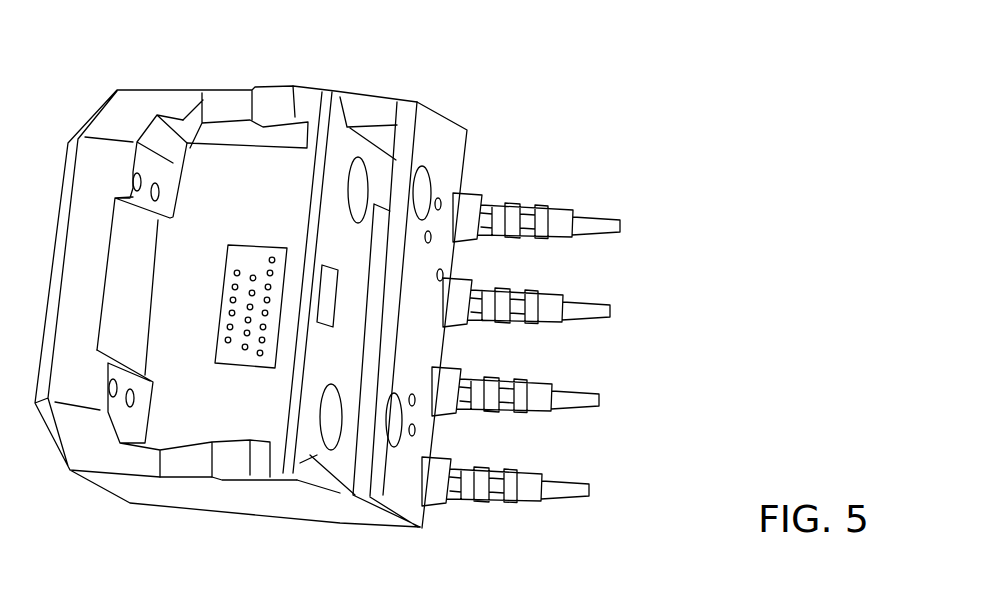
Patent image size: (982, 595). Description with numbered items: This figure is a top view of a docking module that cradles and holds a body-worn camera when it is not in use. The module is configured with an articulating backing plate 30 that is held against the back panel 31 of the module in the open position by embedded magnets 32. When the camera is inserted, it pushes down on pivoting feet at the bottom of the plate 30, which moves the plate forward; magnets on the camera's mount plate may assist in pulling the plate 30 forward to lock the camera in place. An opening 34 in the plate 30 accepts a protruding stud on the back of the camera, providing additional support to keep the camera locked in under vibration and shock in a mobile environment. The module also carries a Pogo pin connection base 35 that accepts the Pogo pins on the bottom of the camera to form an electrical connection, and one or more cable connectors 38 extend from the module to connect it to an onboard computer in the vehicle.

The articulating backing plate 30 is at (320, 100).
The back panel 31 is at (438, 123).
The embedded magnets 32 is at (432, 178).
The opening 34 is at (340, 312).
The Pogo pin connection base 35 is at (255, 265).
The cable connectors 38 is at (563, 361).